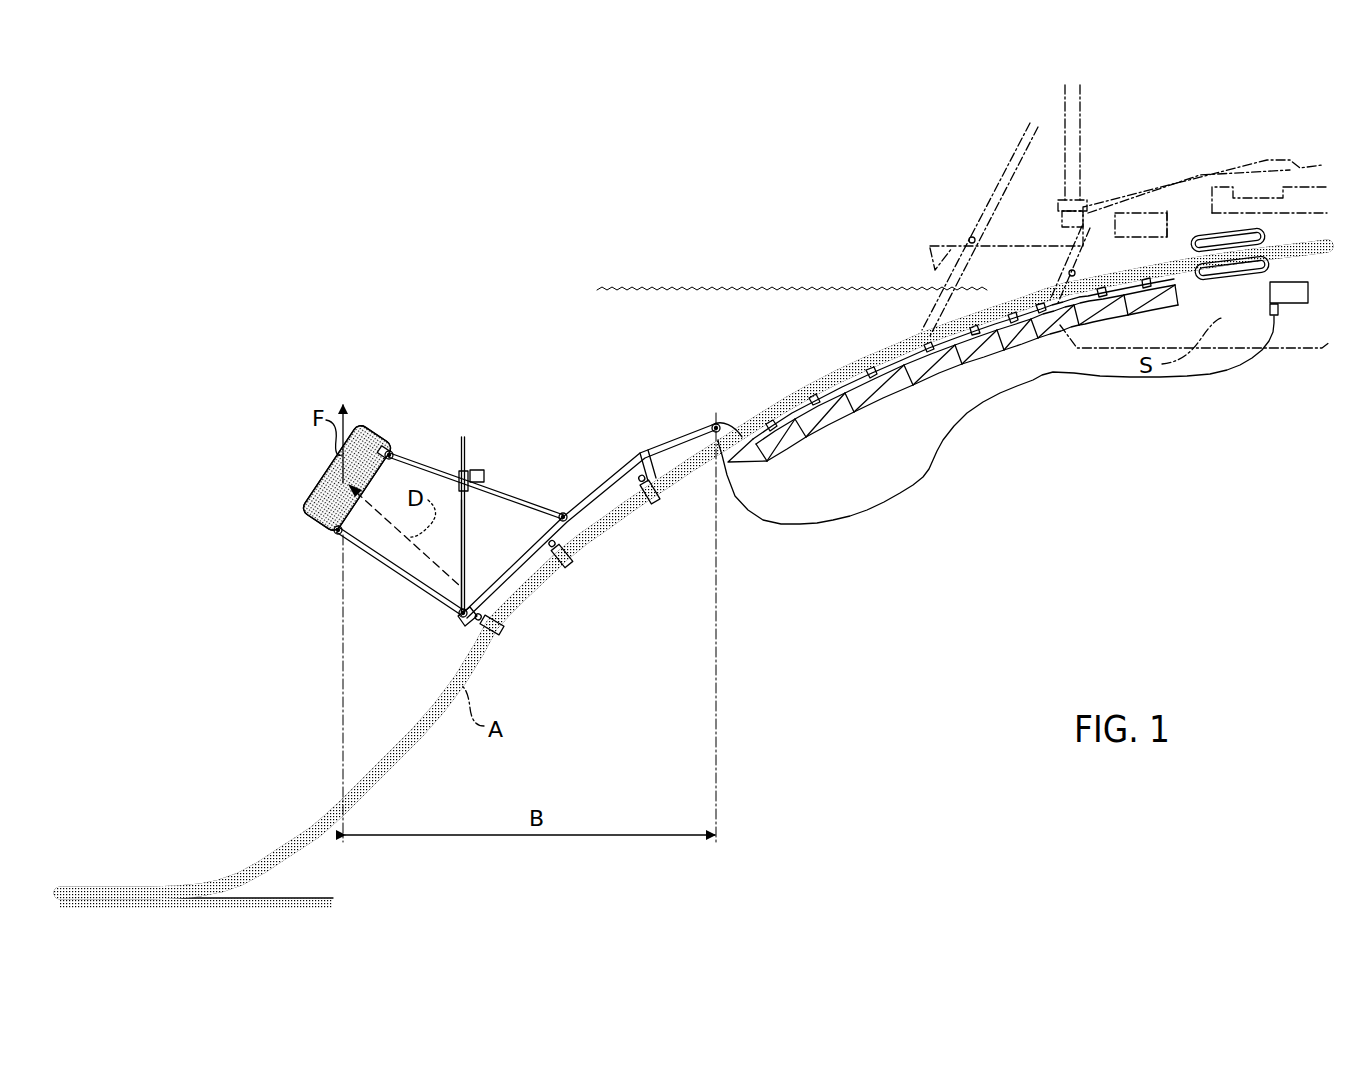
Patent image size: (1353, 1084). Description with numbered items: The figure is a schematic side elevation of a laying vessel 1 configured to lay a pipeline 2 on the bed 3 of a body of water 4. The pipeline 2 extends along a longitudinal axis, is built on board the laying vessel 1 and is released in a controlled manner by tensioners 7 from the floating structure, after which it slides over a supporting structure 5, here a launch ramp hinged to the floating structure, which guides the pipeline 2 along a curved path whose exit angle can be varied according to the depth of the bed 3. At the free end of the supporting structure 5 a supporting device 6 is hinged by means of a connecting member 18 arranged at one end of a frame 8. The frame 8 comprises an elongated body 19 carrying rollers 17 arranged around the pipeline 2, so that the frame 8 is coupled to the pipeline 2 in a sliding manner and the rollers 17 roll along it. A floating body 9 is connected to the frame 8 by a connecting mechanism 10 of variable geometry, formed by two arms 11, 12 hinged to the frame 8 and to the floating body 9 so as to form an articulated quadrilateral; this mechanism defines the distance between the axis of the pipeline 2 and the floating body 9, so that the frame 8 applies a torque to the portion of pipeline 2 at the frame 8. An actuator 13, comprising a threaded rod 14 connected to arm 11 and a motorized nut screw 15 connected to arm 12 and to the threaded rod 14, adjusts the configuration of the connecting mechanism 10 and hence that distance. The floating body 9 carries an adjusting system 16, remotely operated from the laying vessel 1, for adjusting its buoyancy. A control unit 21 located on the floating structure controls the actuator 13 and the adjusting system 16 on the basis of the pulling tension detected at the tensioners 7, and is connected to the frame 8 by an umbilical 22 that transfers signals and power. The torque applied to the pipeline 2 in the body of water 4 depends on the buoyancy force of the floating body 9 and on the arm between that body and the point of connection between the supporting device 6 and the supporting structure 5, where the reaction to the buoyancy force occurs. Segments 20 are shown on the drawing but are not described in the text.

The laying vessel 1 is at (1265, 142).
The pipeline 2 is at (388, 773).
The bed 3 is at (300, 898).
The body of water 4 is at (735, 303).
The supporting structure 5 is at (920, 415).
The supporting device 6 is at (587, 357).
The tensioners 7 is at (1274, 232).
The frame 8 is at (587, 516).
The floating body 9 is at (322, 500).
The connecting mechanism 10 is at (454, 500).
The arm 11 is at (360, 548).
The arm 12 is at (458, 470).
The actuator 13 is at (500, 470).
The threaded rod 14 is at (460, 562).
The motorized nut screw 15 is at (468, 488).
The adjusting system 16 is at (388, 440).
The rollers 17 is at (640, 477).
The connecting member 18 is at (722, 418).
The elongated body 19 is at (700, 436).
The frame segments 20 is at (592, 507).
The control unit 21 is at (1314, 292).
The umbilical 22 is at (1003, 390).